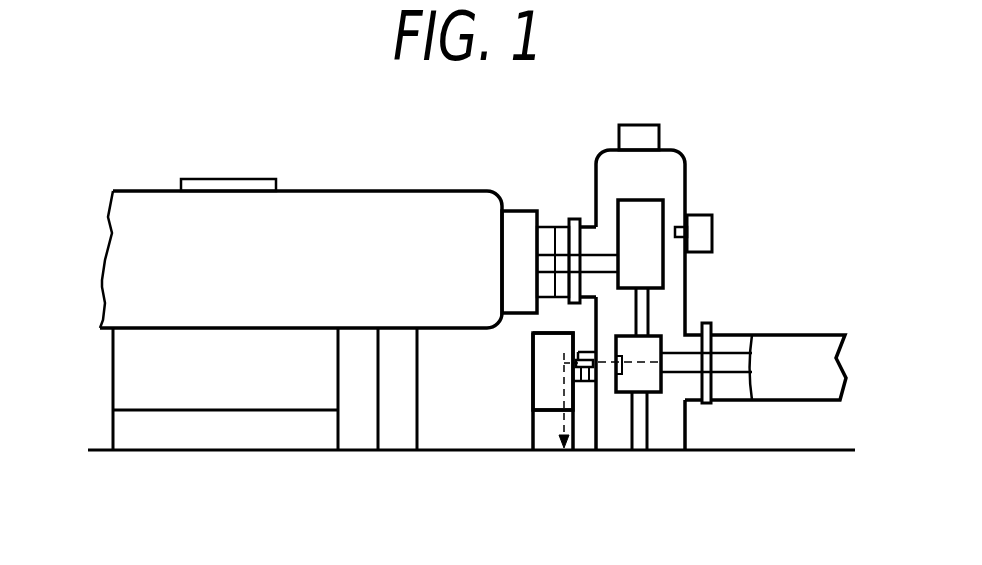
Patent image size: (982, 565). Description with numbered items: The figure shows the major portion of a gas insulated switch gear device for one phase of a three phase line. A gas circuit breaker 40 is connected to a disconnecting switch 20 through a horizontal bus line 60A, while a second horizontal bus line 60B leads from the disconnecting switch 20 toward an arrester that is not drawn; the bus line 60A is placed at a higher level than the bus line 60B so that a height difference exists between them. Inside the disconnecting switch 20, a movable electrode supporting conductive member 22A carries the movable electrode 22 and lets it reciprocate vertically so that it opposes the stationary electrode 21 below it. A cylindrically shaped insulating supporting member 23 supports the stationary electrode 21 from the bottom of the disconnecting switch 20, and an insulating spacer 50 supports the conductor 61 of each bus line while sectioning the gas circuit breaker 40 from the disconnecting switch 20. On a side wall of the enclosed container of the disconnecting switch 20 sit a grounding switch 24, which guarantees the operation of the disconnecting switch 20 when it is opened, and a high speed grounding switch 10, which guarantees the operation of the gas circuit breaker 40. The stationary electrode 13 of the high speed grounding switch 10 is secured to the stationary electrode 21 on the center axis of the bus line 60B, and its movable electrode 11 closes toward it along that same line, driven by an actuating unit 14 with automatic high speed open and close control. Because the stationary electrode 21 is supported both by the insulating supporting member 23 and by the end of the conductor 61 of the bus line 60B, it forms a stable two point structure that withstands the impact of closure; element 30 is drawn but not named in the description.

The high speed grounding switch 10 is at (532, 403).
The movable electrode 11 is at (588, 382).
The stationary electrode 13 is at (622, 395).
The actuating unit 14 is at (543, 355).
The disconnecting switch 20 is at (669, 150).
The stationary electrode 21 is at (645, 352).
The movable electrode 22 is at (650, 305).
The movable electrode supporting conductive member 22A is at (648, 225).
The insulating supporting member 23 is at (643, 423).
The grounding switch 24 is at (712, 233).
The actuator 30 is at (577, 380).
The gas circuit breaker 40 is at (325, 191).
The insulating spacer 50 is at (576, 218).
The bus line 60A is at (560, 255).
The bus line 60B is at (832, 335).
The conductor 61 is at (556, 262).